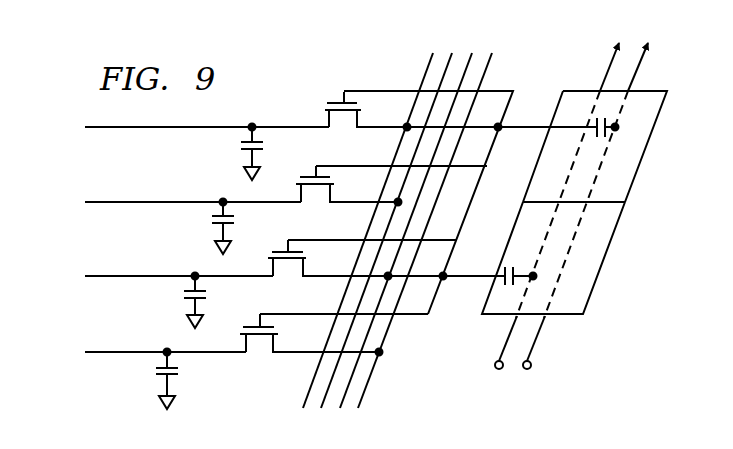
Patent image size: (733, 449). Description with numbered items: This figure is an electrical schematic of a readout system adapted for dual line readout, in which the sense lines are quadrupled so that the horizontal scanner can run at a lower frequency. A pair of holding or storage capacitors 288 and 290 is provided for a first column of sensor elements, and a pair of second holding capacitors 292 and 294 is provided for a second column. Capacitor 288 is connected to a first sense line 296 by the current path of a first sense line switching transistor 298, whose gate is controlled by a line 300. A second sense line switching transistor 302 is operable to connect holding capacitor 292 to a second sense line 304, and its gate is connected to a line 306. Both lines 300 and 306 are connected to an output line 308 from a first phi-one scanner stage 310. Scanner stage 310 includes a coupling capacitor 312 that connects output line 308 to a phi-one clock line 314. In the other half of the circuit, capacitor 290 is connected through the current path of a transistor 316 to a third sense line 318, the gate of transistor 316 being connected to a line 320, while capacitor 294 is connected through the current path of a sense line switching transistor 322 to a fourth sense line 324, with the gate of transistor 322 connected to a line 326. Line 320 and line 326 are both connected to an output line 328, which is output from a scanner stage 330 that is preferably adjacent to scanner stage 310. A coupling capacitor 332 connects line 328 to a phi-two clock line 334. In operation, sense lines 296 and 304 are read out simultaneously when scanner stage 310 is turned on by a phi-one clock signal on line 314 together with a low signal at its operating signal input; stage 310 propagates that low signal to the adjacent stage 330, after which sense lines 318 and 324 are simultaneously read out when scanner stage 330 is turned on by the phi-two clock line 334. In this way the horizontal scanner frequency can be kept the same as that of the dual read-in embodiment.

The holding capacitor 288 is at (246, 152).
The holding capacitor 290 is at (188, 298).
The second holding capacitor 292 is at (212, 230).
The second holding capacitor 294 is at (161, 374).
The first sense line 296 is at (433, 60).
The first sense line switching transistor 298 is at (322, 108).
The line 300 is at (511, 88).
The second sense line switching transistor 302 is at (300, 173).
The second sense line 304 is at (452, 57).
The line 306 is at (475, 167).
The output line 308 is at (501, 131).
The first phi-1 scanner stage 310 is at (627, 184).
The coupling capacitor 312 is at (608, 135).
The phi-1 clock line 314 is at (640, 61).
The transistor 316 is at (268, 248).
The third sense line 318 is at (473, 56).
The line 320 is at (447, 239).
The sense line switching transistor 322 is at (243, 327).
The fourth sense line 324 is at (493, 60).
The line 326 is at (418, 316).
The output line 328 is at (445, 279).
The scanner stage 330 is at (612, 225).
The coupling capacitor 332 is at (502, 268).
The phi-2 clock line 334 is at (508, 340).